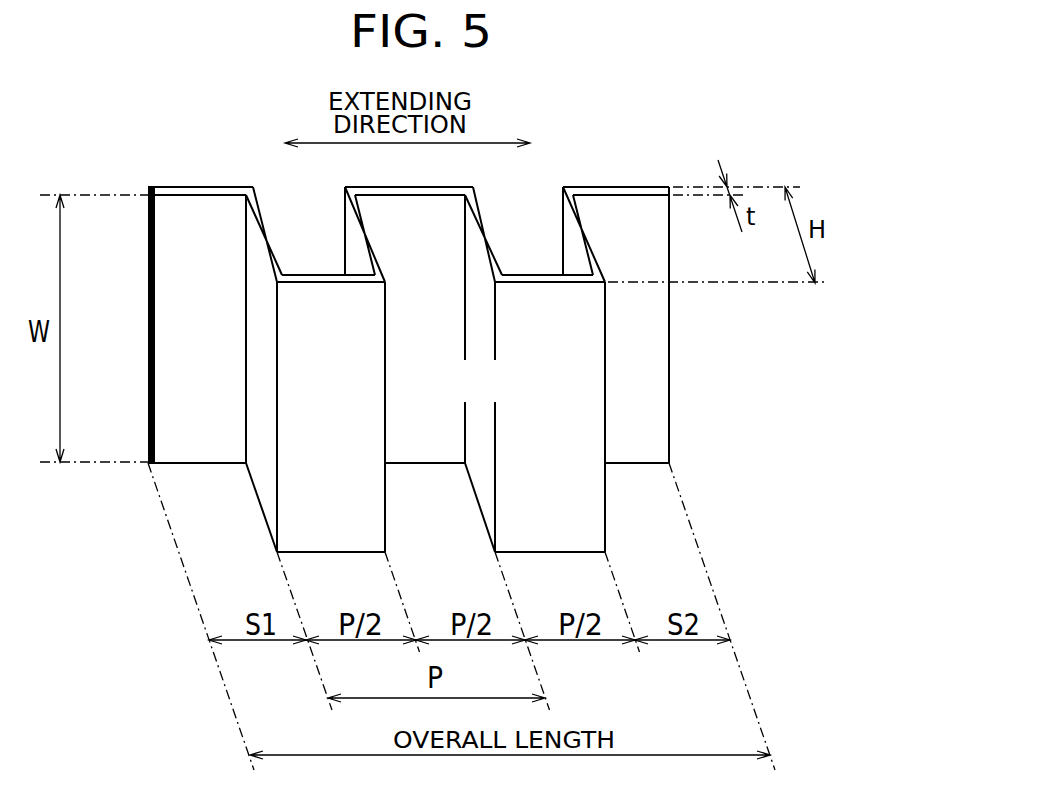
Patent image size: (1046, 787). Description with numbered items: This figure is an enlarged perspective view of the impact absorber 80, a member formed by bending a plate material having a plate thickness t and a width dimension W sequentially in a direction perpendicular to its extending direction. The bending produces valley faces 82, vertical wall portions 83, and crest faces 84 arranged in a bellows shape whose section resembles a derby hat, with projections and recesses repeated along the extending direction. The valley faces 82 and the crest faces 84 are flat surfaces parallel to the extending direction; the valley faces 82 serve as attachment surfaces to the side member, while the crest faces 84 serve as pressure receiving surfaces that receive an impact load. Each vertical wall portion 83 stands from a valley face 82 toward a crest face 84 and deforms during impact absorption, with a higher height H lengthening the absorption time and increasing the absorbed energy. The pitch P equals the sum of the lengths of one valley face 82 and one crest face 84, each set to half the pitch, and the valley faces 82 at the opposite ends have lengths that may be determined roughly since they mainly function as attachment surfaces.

The impact absorber 80 is at (96, 559).
The valley face 82 is at (203, 447).
The vertical wall portion 83 is at (262, 390).
The crest face 84 is at (333, 537).